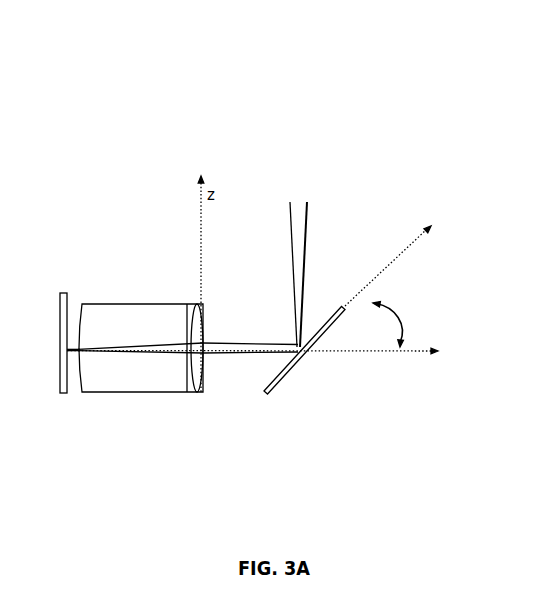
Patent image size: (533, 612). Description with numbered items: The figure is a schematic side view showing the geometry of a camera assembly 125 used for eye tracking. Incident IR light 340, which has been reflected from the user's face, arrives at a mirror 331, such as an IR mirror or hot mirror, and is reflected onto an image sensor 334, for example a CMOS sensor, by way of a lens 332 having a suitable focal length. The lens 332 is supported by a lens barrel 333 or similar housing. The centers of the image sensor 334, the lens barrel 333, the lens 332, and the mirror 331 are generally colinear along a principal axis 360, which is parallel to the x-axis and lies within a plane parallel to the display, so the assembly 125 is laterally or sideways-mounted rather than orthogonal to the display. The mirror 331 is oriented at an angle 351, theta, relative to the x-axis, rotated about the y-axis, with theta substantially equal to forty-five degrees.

The camera assembly 125 is at (104, 82).
The mirror 331 is at (290, 373).
The lens 332 is at (201, 396).
The lens barrel 333 is at (103, 303).
The image sensor 334 is at (68, 396).
The incident IR light 340 is at (307, 226).
The angle 351 is at (393, 308).
The principal axis 360 is at (367, 353).